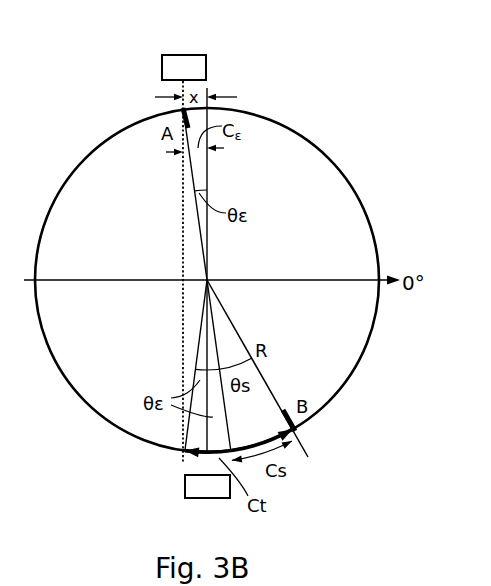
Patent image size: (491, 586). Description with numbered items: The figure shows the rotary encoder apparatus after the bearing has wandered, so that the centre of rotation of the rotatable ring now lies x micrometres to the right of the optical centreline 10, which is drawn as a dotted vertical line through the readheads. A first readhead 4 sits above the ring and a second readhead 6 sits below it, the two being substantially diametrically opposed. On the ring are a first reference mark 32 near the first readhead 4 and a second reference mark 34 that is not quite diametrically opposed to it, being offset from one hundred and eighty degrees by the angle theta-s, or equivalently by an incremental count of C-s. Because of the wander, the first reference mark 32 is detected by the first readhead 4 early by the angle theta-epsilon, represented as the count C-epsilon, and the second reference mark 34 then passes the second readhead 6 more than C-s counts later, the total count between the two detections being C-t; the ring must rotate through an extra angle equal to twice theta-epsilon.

The first readhead 4 is at (206, 60).
The second readhead 6 is at (185, 481).
The optical centreline 10 is at (182, 210).
The first reference mark 32 is at (182, 111).
The second reference mark 34 is at (297, 432).